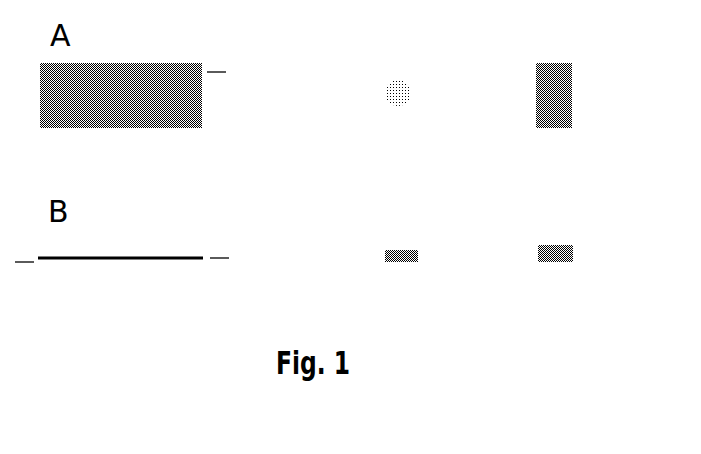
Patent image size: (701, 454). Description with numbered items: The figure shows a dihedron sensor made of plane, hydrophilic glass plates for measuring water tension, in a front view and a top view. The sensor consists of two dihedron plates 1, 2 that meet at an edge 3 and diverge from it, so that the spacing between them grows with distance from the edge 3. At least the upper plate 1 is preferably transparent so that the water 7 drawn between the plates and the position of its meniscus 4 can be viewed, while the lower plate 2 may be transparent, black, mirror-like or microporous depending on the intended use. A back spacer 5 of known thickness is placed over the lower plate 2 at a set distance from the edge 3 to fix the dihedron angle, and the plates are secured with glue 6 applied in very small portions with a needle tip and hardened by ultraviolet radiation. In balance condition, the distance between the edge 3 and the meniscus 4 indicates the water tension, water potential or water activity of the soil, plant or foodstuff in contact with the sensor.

The upper plate 1 is at (273, 227).
The lower plate 2 is at (568, 275).
The edge 3 is at (15, 262).
The meniscus 4 is at (223, 72).
The back spacer 5 is at (512, 91).
The glue 6 is at (438, 91).
The water 7 is at (177, 112).